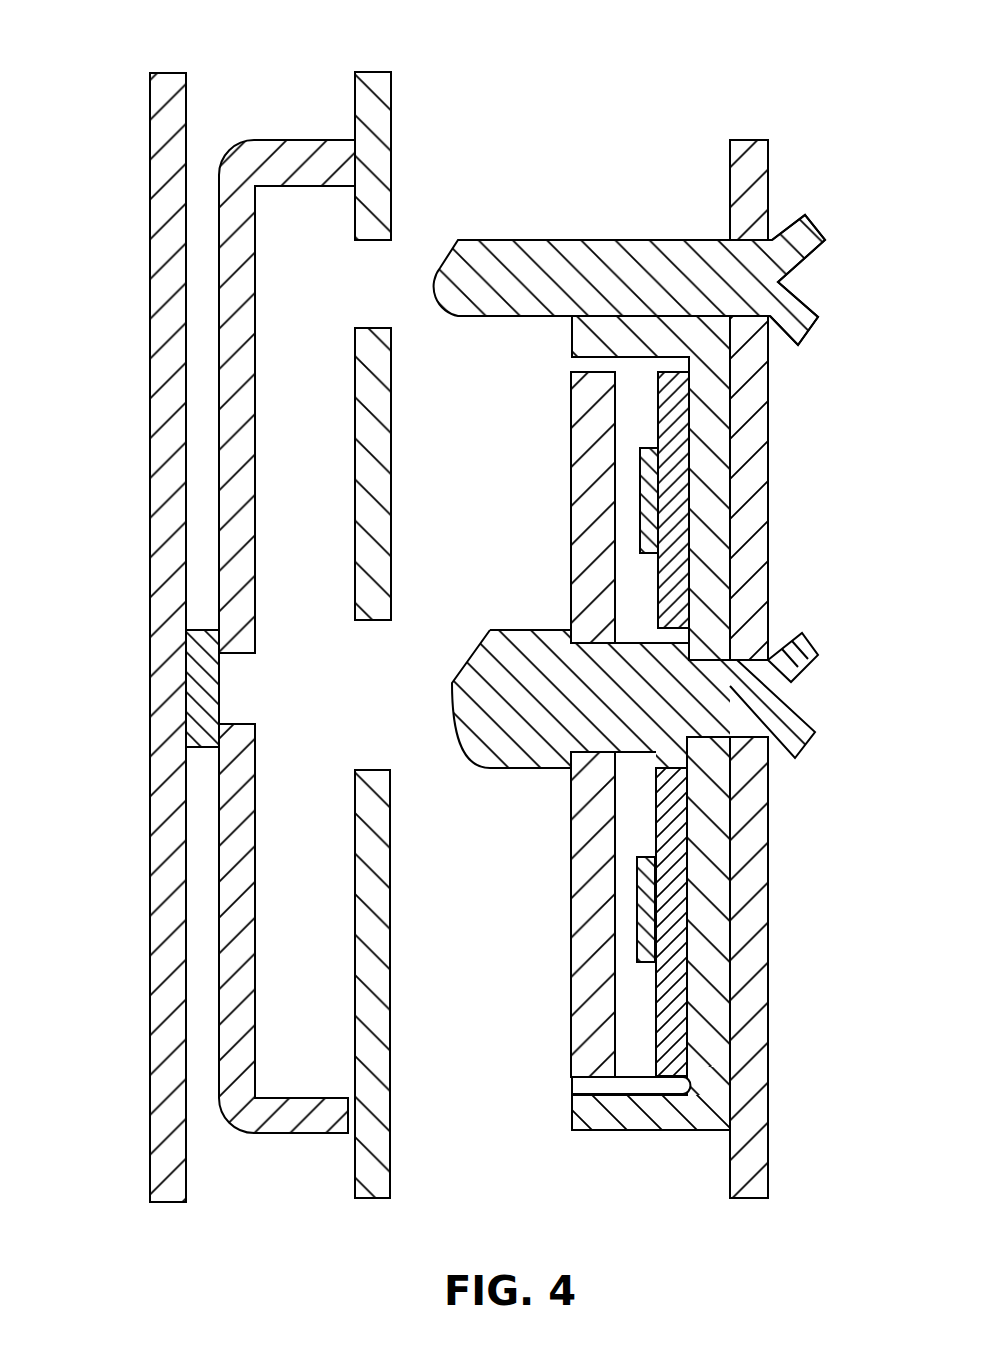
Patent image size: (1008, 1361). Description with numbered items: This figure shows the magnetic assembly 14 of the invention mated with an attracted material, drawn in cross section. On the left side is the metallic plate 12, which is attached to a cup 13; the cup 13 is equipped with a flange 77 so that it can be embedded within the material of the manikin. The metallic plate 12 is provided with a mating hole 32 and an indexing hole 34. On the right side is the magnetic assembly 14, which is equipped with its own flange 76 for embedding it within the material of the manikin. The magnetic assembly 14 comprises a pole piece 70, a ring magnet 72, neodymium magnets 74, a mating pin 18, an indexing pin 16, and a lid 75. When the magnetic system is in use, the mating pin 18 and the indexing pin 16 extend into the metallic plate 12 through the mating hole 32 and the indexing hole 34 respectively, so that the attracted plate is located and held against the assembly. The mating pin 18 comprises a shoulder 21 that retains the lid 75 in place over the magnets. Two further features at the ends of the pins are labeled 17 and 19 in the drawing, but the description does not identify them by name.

The metallic plate 12 is at (382, 90).
The cup 13 is at (263, 145).
The magnetic assembly 14 is at (700, 138).
The indexing pin 16 is at (527, 268).
The contact tab 17 is at (782, 322).
The mating pin 18 is at (527, 688).
The contact tab 19 is at (783, 660).
The shoulder 21 is at (555, 632).
The mating hole 32 is at (372, 655).
The indexing hole 34 is at (375, 260).
The pole piece 70 is at (638, 1108).
The ring magnet 72 is at (668, 608).
The neodymium magnets 74 is at (648, 483).
The lid 75 is at (583, 992).
The flange 76 is at (752, 1000).
The flange 77 is at (160, 102).